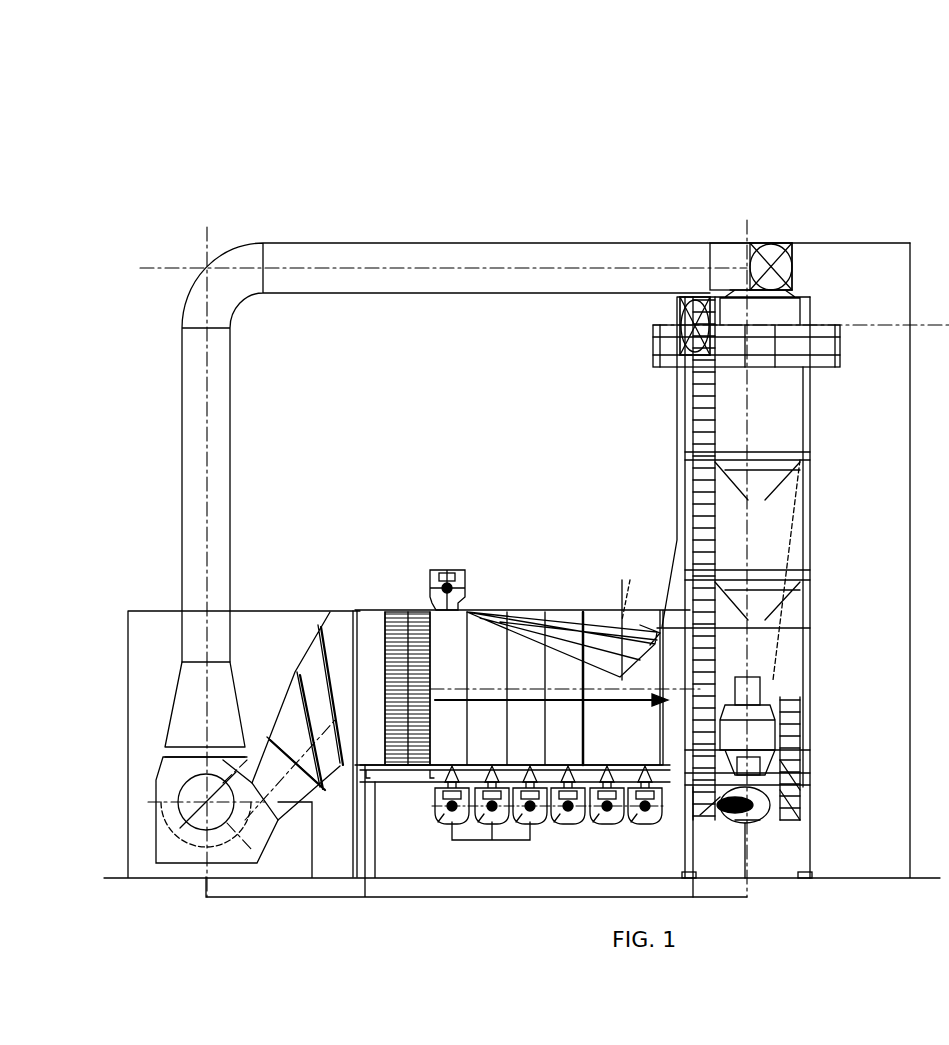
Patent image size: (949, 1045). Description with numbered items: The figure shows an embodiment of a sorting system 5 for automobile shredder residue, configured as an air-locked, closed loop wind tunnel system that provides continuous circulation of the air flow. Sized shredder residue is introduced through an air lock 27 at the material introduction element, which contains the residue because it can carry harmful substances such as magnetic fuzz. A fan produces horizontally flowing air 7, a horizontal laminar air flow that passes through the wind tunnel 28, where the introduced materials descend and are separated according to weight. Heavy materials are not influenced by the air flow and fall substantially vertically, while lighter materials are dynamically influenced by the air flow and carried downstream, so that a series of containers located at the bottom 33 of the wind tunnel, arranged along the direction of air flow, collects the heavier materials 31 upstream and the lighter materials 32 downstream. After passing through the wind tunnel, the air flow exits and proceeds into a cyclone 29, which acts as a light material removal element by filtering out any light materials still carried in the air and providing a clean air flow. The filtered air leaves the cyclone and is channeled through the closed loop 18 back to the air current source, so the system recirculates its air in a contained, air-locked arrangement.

The sorting system 5 is at (299, 177).
The closed loop channel 18 is at (418, 247).
The cyclone 29 is at (777, 397).
The air lock 27 is at (438, 580).
The horizontally flowing air 7 is at (487, 700).
The wind tunnel 28 is at (567, 580).
The bottom of wind tunnel 33 is at (458, 765).
The heavier materials 31 is at (472, 840).
The lighter materials 32 is at (615, 825).